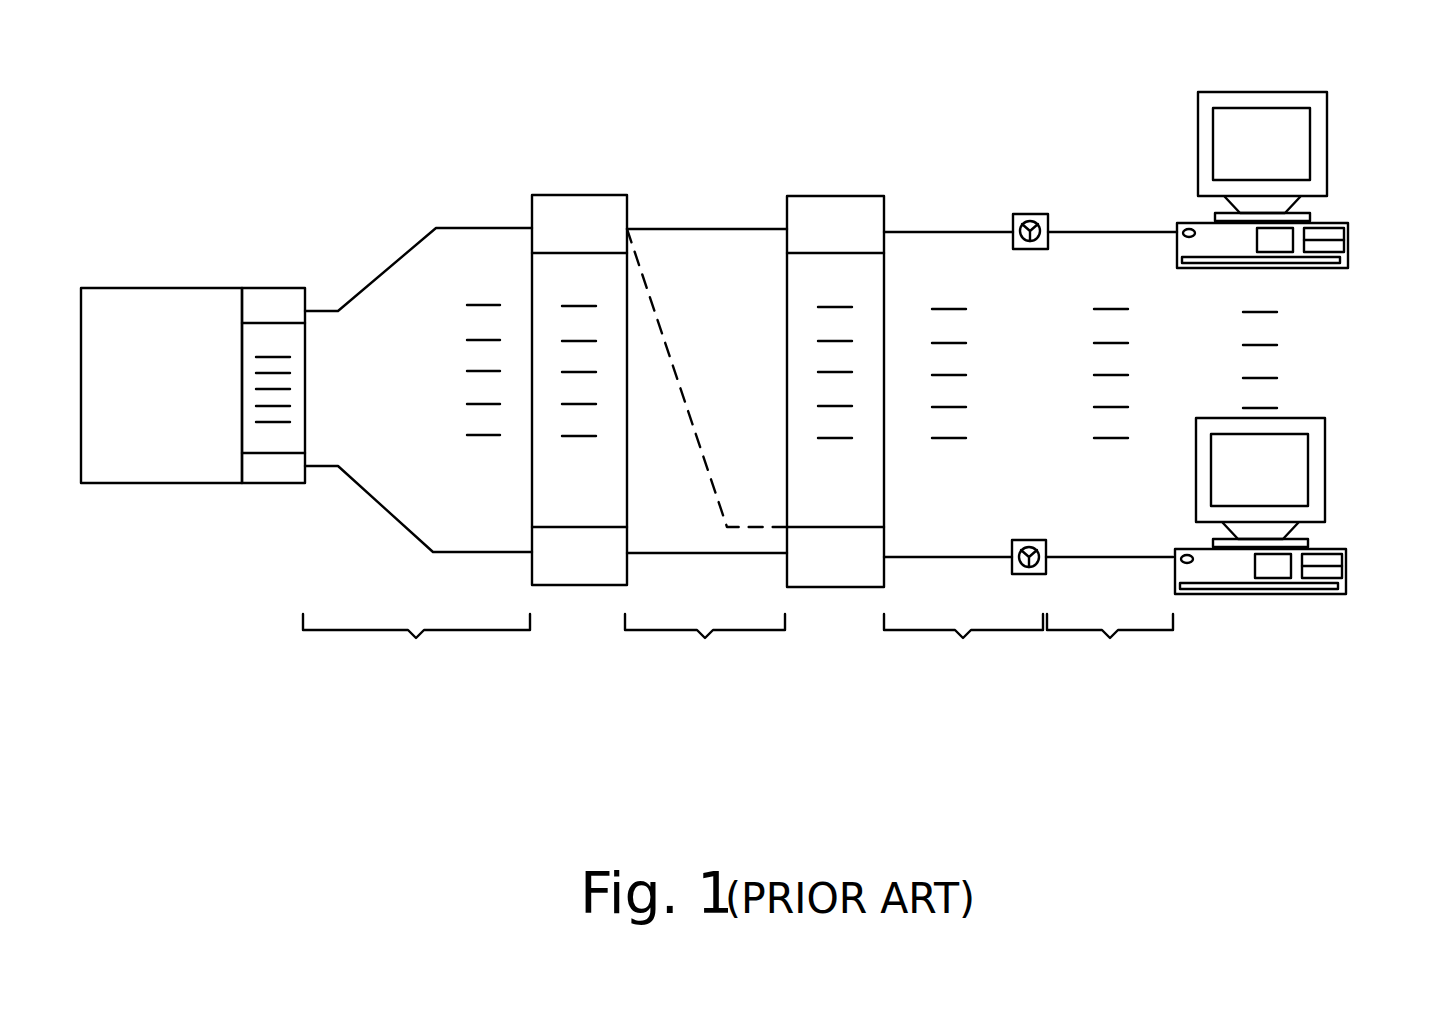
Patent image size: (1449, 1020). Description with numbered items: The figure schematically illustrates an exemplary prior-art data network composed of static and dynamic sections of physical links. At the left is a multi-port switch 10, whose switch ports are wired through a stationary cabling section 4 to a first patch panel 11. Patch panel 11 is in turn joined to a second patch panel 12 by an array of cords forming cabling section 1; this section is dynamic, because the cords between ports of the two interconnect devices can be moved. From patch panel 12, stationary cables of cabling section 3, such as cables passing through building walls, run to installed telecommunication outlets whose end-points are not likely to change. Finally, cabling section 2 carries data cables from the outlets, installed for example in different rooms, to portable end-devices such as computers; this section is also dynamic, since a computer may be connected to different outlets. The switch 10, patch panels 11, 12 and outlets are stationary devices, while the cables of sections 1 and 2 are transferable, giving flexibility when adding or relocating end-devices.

The multi-port switch 10 is at (158, 290).
The patch panel 11 is at (552, 195).
The patch panel 12 is at (823, 196).
The cabling section 1 is at (706, 628).
The cabling section 2 is at (1111, 468).
The cabling section 3 is at (963, 468).
The cabling section 4 is at (417, 466).